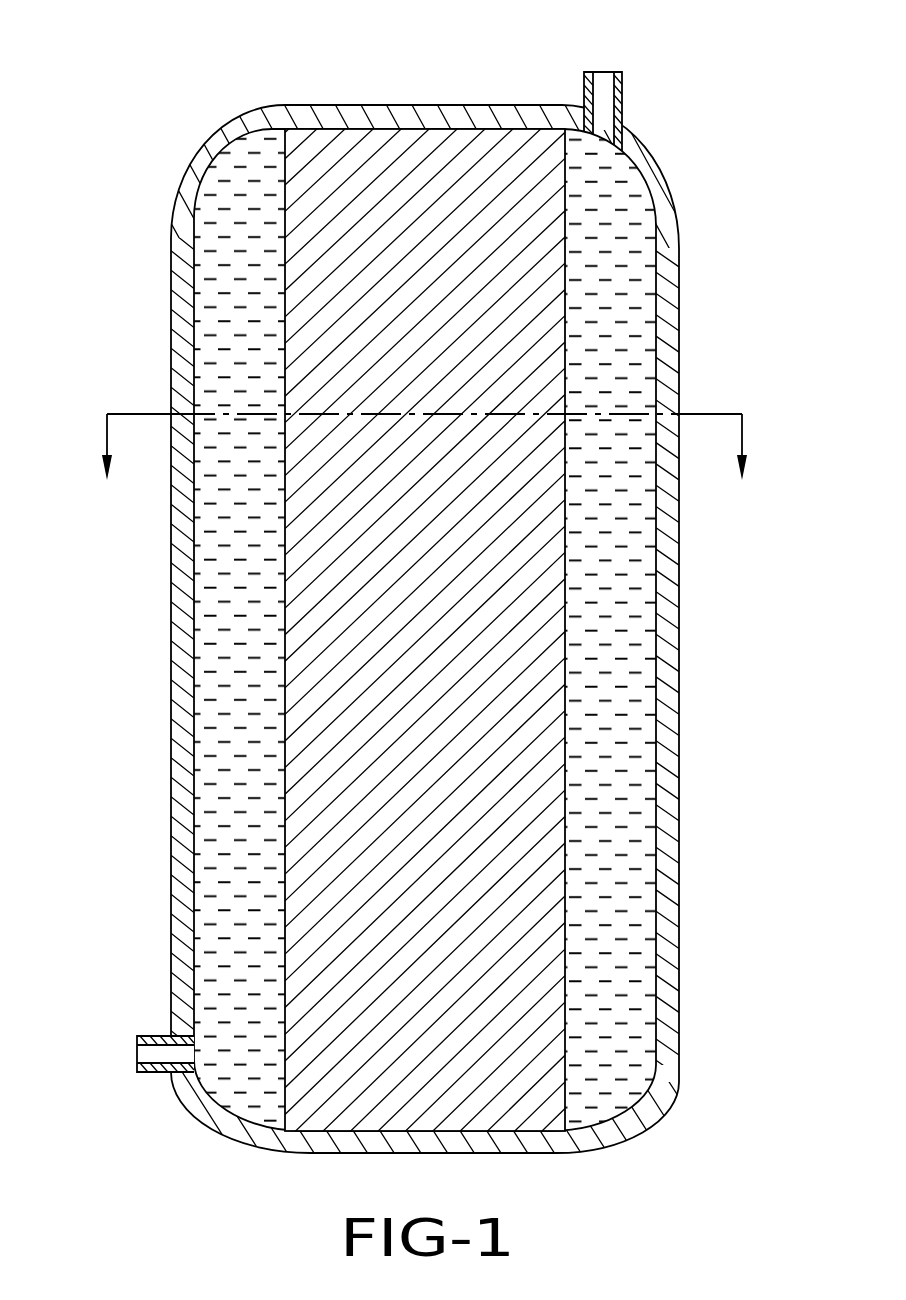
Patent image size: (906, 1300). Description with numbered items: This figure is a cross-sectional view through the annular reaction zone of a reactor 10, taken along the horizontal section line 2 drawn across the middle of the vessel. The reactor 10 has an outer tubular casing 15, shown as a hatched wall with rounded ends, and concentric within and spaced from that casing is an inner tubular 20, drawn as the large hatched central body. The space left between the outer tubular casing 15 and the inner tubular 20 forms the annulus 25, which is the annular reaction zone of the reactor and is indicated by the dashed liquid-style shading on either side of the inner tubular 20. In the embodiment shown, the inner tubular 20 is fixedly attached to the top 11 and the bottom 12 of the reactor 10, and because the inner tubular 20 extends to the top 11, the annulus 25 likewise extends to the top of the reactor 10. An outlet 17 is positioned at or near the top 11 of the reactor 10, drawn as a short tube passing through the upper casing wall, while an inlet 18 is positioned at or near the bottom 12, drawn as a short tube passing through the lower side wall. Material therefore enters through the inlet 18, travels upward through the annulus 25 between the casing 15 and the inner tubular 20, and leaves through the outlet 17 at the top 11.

The reactor 10 is at (448, 650).
The top 11 is at (307, 113).
The bottom 12 is at (515, 1143).
The outer tubular casing 15 is at (680, 970).
The outlet 17 is at (603, 97).
The inlet 18 is at (163, 1053).
The inner tubular 20 is at (563, 280).
The annulus 25 is at (607, 840).
The section line 2- 2 is at (424, 466).